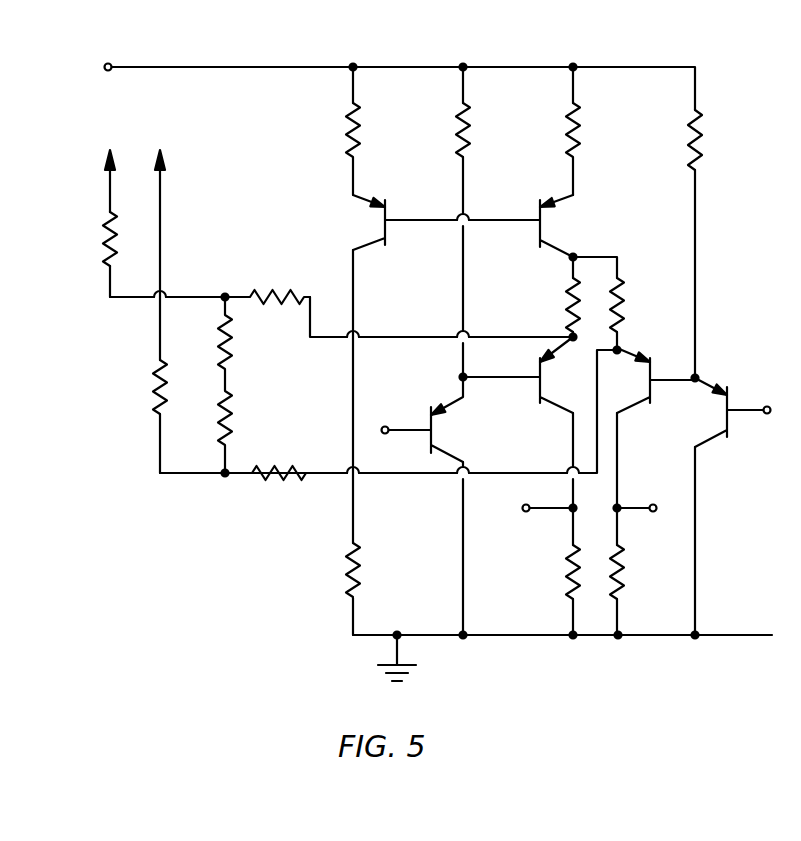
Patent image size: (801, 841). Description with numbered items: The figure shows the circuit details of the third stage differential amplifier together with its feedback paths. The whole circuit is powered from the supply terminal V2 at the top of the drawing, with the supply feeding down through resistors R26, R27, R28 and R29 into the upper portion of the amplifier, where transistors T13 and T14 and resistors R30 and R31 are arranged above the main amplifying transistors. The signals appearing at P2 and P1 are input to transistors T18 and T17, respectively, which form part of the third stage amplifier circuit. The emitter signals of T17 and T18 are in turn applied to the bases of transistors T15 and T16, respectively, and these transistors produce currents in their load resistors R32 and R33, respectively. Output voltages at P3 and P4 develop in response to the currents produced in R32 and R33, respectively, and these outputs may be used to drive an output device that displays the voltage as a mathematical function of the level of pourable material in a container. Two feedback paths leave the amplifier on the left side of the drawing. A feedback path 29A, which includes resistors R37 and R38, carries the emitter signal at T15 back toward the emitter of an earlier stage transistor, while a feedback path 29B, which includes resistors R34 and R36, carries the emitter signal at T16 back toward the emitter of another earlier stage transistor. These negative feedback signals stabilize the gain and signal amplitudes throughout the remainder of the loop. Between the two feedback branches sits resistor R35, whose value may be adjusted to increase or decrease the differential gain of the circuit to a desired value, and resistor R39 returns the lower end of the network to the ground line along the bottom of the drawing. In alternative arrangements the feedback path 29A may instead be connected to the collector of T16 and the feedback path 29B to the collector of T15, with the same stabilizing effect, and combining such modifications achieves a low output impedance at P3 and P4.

The supply voltage terminal V2 is at (90, 72).
The feedback path 29A is at (390, 336).
The feedback path 29B is at (403, 488).
The resistor R26 is at (331, 149).
The resistor R27 is at (440, 129).
The resistor R28 is at (546, 149).
The resistor R29 is at (665, 144).
The resistor R30 is at (546, 305).
The resistor R31 is at (640, 305).
The load resistor R32 is at (546, 572).
The load resistor R33 is at (642, 572).
The resistor R34 is at (286, 489).
The resistor R35 is at (237, 408).
The resistor R36 is at (135, 387).
The resistor R37 is at (267, 283).
The resistor R38 is at (112, 238).
The resistor R39 is at (377, 570).
The transistor T13 is at (358, 222).
The transistor T14 is at (564, 226).
The transistor T15 is at (561, 375).
The transistor T16 is at (626, 380).
The transistor T17 is at (457, 419).
The transistor T18 is at (700, 412).
The input terminal P1 is at (401, 416).
The input terminal P2 is at (751, 396).
The output terminal P3 is at (531, 505).
The output terminal P4 is at (641, 497).